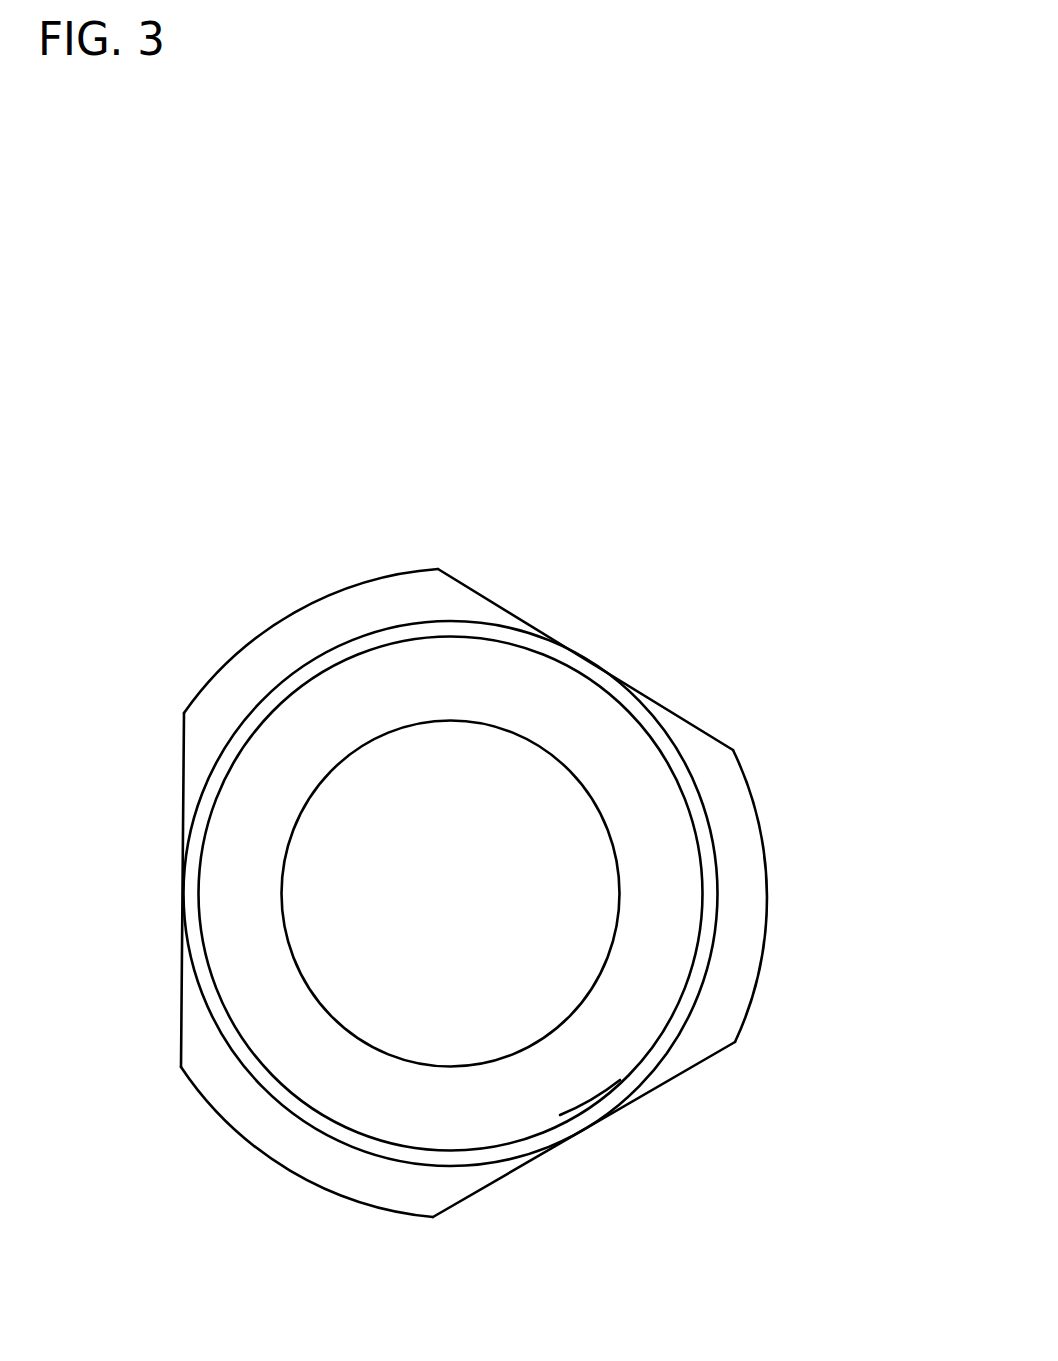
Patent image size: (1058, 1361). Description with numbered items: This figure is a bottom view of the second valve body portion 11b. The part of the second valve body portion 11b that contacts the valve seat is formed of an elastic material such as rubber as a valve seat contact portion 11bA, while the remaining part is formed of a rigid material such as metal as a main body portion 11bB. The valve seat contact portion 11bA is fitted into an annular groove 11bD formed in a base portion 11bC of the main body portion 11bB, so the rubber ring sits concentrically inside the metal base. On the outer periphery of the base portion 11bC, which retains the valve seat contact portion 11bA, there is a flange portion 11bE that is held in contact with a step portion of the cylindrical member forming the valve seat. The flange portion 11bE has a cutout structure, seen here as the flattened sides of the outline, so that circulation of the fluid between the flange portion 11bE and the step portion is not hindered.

The second valve body portion 11b is at (578, 613).
The valve seat contact portion 11bA is at (568, 707).
The main body portion 11bB is at (693, 763).
The base portion 11bC is at (718, 815).
The annular groove 11bD is at (596, 1108).
The flange portion 11bE is at (280, 645).